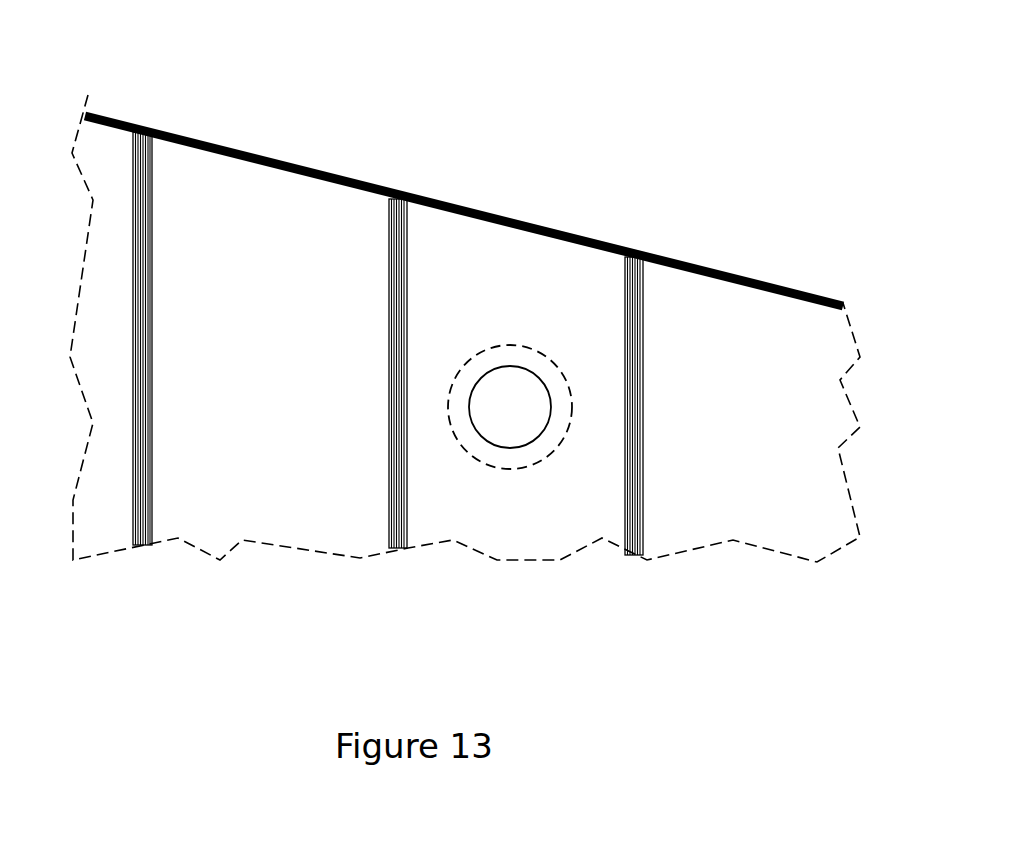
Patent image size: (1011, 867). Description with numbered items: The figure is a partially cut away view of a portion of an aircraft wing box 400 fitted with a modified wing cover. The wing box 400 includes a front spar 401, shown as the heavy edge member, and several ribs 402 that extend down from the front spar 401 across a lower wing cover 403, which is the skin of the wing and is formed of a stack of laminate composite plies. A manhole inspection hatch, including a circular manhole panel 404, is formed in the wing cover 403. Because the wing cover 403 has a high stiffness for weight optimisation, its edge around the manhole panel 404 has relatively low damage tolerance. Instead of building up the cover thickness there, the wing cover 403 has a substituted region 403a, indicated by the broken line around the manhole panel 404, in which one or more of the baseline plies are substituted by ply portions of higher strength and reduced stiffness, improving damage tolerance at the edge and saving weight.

The aircraft wing box 400 is at (747, 157).
The front spar 401 is at (795, 286).
The ribs 402 is at (139, 545).
The lower wing cover 403 is at (818, 488).
The substituted region 403a is at (521, 453).
The manhole panel 404 is at (508, 383).